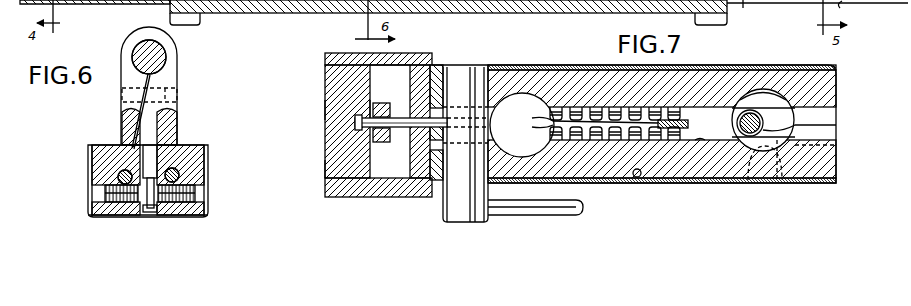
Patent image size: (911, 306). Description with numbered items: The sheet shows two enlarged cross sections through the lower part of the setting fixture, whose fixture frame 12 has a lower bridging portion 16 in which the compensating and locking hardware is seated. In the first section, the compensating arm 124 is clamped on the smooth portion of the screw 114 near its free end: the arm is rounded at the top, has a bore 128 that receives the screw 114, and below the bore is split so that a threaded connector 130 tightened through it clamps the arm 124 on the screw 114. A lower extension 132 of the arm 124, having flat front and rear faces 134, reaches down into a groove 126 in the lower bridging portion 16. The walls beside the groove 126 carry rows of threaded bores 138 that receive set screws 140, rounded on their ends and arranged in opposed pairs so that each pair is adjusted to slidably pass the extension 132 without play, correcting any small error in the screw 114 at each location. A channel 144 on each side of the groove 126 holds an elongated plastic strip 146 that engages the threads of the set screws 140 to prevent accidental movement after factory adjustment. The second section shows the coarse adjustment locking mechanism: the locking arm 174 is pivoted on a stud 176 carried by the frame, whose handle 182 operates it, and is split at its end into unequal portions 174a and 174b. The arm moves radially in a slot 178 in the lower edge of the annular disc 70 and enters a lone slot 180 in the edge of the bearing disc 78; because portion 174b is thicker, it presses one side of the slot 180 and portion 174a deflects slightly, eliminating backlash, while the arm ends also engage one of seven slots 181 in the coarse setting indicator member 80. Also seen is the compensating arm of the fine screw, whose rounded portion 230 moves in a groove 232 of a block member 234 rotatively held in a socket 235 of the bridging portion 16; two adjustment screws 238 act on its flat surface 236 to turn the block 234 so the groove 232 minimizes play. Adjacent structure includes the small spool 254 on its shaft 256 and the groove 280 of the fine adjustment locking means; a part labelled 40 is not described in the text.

In FIG. 7, the fixture frame 12 is at (450, 15).
In FIG. 6, the lower bridging portion 16 is at (200, 145).
In FIG. 7, the lower bridging portion 16 is at (837, 85).
In FIG. 7, the frame member 40 is at (892, 12).
In FIG. 7, the annular disc 70 is at (408, 163).
In FIG. 7, the annular bearing disc 78 is at (378, 103).
In FIG. 7, the coarse setting indicator member 80 is at (332, 117).
In FIG. 6, the screw 114 is at (135, 52).
In FIG. 6, the compensating arm 124 is at (178, 76).
In FIG. 6, the groove 126 is at (178, 135).
In FIG. 7, the groove 126 is at (700, 138).
In FIG. 6, the bore 128 is at (163, 62).
In FIG. 6, the threaded connector 130 is at (178, 91).
In FIG. 6, the lower extension 132 is at (147, 155).
In FIG. 7, the lower extension 132 is at (688, 124).
In FIG. 6, the flat front and rear faces 134 is at (137, 212).
In FIG. 6, the threaded bores 138 is at (100, 198).
In FIG. 7, the threaded bores 138 is at (660, 76).
In FIG. 6, the set screws 140 is at (197, 198).
In FIG. 7, the set screws 140 is at (522, 125).
In FIG. 6, the channel 144 is at (115, 173).
In FIG. 6, the plastic strip 146 is at (110, 188).
In FIG. 7, the plastic strip 146 is at (548, 107).
In FIG. 7, the locking arm 174 is at (370, 147).
In FIG. 7, the arm portion 174a is at (325, 170).
In FIG. 7, the arm portion 174b is at (370, 115).
In FIG. 7, the stud 176 is at (447, 212).
In FIG. 7, the slot 178 is at (405, 117).
In FIG. 7, the lone slot 180 is at (400, 125).
In FIG. 7, the slots 181 is at (357, 127).
In FIG. 7, the handle 182 is at (577, 214).
In FIG. 7, the rounded portion 230 is at (791, 119).
In FIG. 7, the groove 232 is at (837, 130).
In FIG. 7, the block member 234 is at (753, 100).
In FIG. 7, the socket 235 is at (772, 100).
In FIG. 7, the flat surface 236 is at (838, 148).
In FIG. 7, the adjustment screws 238 is at (767, 180).
In FIG. 7, the small spool 254 is at (855, 12).
In FIG. 7, the shaft 256 is at (792, 14).
In FIG. 7, the groove 280 is at (744, 22).